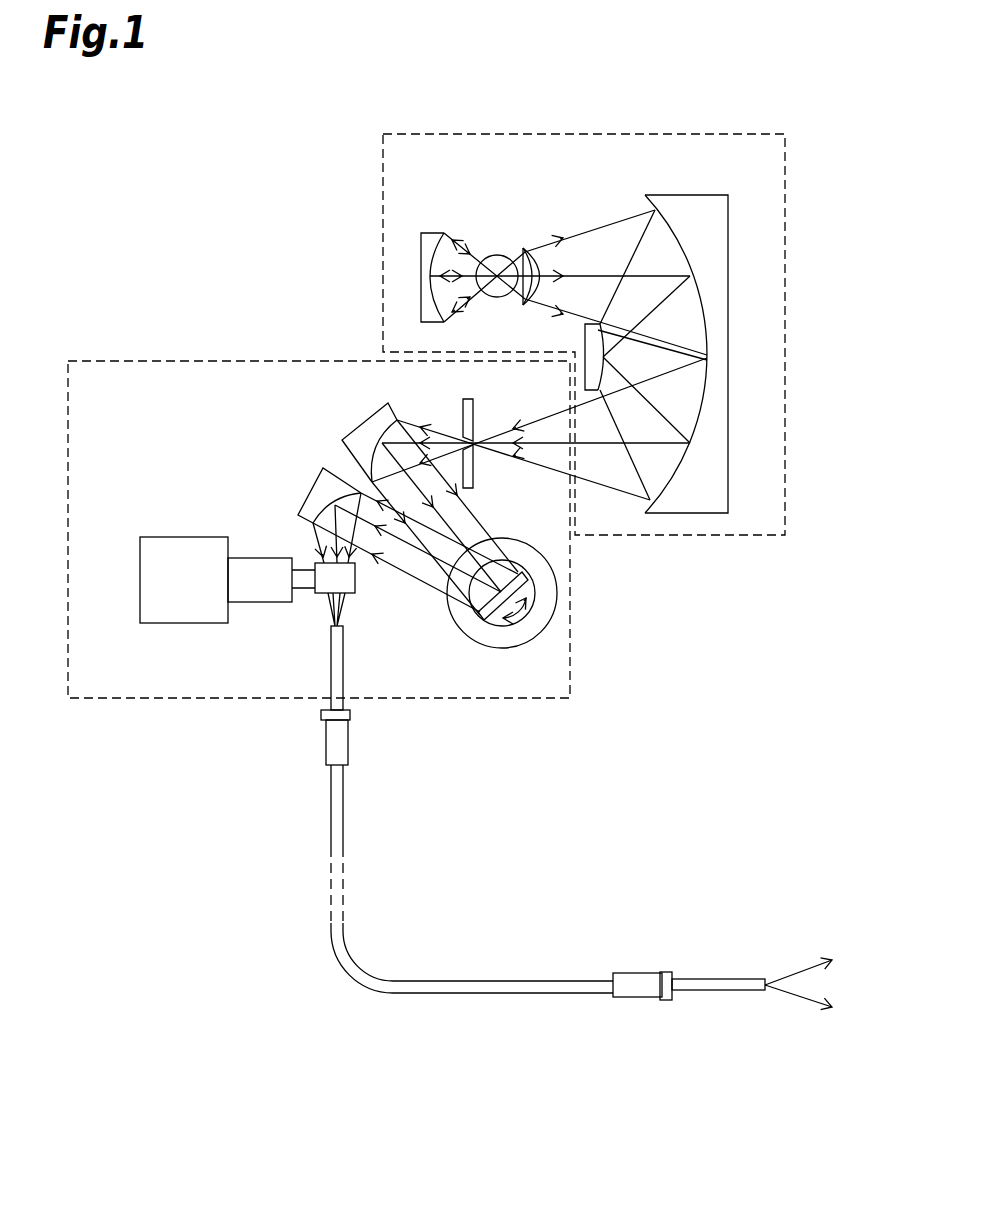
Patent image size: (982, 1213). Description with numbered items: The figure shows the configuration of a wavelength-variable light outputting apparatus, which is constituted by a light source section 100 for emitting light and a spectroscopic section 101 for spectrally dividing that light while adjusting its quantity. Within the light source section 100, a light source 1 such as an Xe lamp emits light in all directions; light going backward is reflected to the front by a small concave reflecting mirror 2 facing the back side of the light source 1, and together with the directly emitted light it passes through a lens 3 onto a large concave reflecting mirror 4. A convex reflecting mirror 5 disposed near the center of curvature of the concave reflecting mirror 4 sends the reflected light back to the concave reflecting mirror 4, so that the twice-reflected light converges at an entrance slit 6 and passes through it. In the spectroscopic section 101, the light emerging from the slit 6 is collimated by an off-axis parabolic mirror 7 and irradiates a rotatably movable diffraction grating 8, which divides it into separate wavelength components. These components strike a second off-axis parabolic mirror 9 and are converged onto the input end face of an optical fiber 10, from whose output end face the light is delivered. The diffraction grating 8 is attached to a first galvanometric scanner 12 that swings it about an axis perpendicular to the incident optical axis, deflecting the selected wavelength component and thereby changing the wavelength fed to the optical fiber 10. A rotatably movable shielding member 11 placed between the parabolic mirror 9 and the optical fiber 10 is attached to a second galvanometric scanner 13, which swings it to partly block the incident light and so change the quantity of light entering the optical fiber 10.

The light source 1 is at (502, 255).
The small concave reflecting mirror 2 is at (431, 233).
The lens 3 is at (543, 248).
The large concave reflecting mirror 4 is at (729, 356).
The convex reflecting mirror 5 is at (585, 340).
The entrance slit 6 is at (476, 478).
The off-axis parabolic mirror 7 is at (362, 428).
The diffraction grating 8 is at (493, 612).
The off-axis parabolic mirror 9 is at (315, 493).
The optical fiber 10 is at (332, 662).
The shielding member 11 is at (352, 578).
The first galvanometric scanner 12 is at (535, 628).
The second galvanometric scanner 13 is at (180, 550).
The light source section 100 is at (723, 133).
The spectroscopic section 101 is at (158, 362).